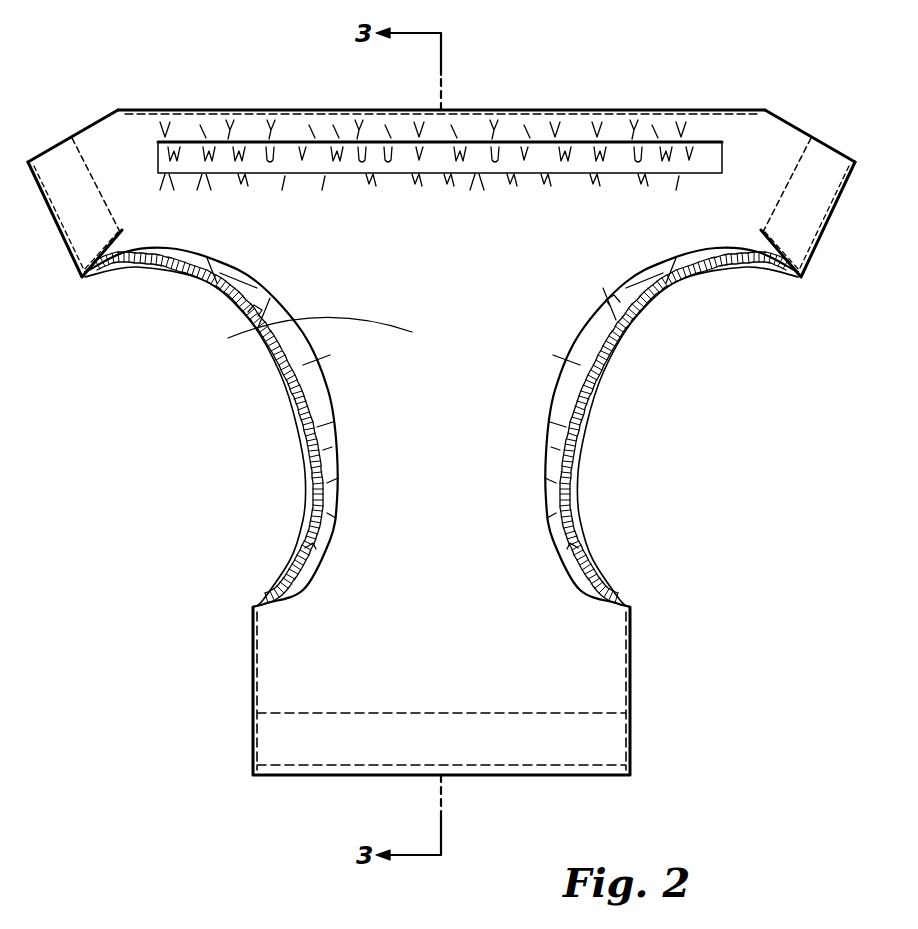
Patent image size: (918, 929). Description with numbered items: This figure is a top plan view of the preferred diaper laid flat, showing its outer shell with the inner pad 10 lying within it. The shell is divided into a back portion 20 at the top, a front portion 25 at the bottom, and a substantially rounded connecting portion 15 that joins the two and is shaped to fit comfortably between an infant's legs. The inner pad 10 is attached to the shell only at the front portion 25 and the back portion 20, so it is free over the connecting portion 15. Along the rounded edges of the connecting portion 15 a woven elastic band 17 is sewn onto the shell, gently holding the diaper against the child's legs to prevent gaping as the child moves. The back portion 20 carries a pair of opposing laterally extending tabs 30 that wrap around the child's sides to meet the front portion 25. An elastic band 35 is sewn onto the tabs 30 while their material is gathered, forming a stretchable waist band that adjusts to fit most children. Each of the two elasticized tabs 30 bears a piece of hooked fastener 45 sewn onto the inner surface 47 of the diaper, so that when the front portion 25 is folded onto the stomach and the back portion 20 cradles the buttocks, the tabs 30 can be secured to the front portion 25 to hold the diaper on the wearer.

The inner pad 10 is at (533, 358).
The connecting portion 15 is at (283, 393).
The woven elastic band 17 is at (318, 492).
The back portion 20 is at (700, 257).
The front portion 25 is at (633, 692).
The laterally extending tabs 30 is at (136, 130).
The elastic band 35 is at (245, 152).
The hooked VELCRO fastener 45 is at (70, 208).
The inner surface 47 is at (267, 327).